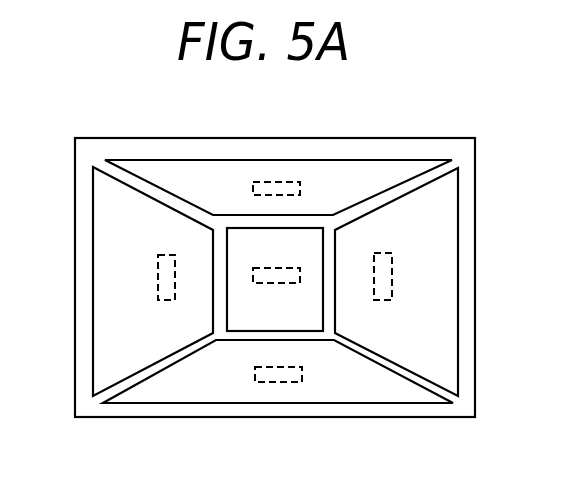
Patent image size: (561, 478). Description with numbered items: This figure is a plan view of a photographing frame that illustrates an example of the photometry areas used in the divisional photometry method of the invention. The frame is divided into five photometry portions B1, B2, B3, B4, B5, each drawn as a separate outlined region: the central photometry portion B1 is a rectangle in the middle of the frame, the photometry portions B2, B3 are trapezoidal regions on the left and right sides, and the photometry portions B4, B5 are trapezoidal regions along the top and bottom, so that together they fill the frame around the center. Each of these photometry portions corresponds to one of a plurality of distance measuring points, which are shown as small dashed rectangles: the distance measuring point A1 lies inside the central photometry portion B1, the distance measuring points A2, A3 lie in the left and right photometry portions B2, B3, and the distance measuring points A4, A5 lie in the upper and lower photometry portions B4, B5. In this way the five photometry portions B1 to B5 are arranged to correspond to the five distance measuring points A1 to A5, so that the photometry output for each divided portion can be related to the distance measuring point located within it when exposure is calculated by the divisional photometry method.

The distance measuring point A1 is at (287, 268).
The distance measuring point A2 is at (158, 271).
The distance measuring point A3 is at (392, 272).
The distance measuring point A4 is at (283, 182).
The distance measuring point A5 is at (272, 382).
The photometry portion B1 is at (275, 279).
The photometry portion B2 is at (153, 281).
The photometry portion B3 is at (396, 282).
The photometry portion B4 is at (278, 187).
The photometry portion B5 is at (278, 371).